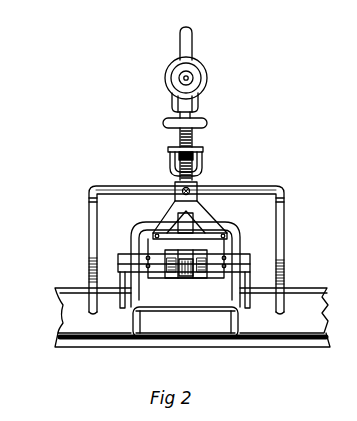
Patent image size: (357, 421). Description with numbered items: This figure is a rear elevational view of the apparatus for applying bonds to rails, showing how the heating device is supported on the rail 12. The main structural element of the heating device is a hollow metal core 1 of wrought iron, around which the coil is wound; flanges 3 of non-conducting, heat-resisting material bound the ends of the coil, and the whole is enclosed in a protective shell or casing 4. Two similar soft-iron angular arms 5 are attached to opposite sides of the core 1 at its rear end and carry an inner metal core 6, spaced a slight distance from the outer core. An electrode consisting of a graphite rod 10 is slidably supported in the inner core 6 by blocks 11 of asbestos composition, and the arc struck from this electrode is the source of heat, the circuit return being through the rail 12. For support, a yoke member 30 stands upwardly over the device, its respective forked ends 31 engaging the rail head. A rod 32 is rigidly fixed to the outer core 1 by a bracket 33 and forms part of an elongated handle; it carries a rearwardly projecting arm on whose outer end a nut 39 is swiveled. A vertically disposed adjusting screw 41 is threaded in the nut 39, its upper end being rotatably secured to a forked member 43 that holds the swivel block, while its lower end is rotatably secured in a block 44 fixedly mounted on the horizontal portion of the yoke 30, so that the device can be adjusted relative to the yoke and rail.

The hollow metal core 1 is at (205, 276).
The flanges 3 is at (182, 278).
The protective shell or casing 4 is at (168, 312).
The angular arms 5 is at (119, 262).
The inner metal core 6 is at (185, 321).
The electrode rod 10 is at (186, 252).
The blocks 11 is at (203, 263).
The rail 12 is at (66, 313).
The yoke member 30 is at (110, 186).
The forked ends 31 is at (89, 273).
The rod 32 is at (192, 47).
The bracket 33 is at (205, 220).
The nut 39 is at (193, 150).
The adjusting screw 41 is at (182, 172).
The forked member 43 is at (198, 99).
The block 44 is at (174, 194).